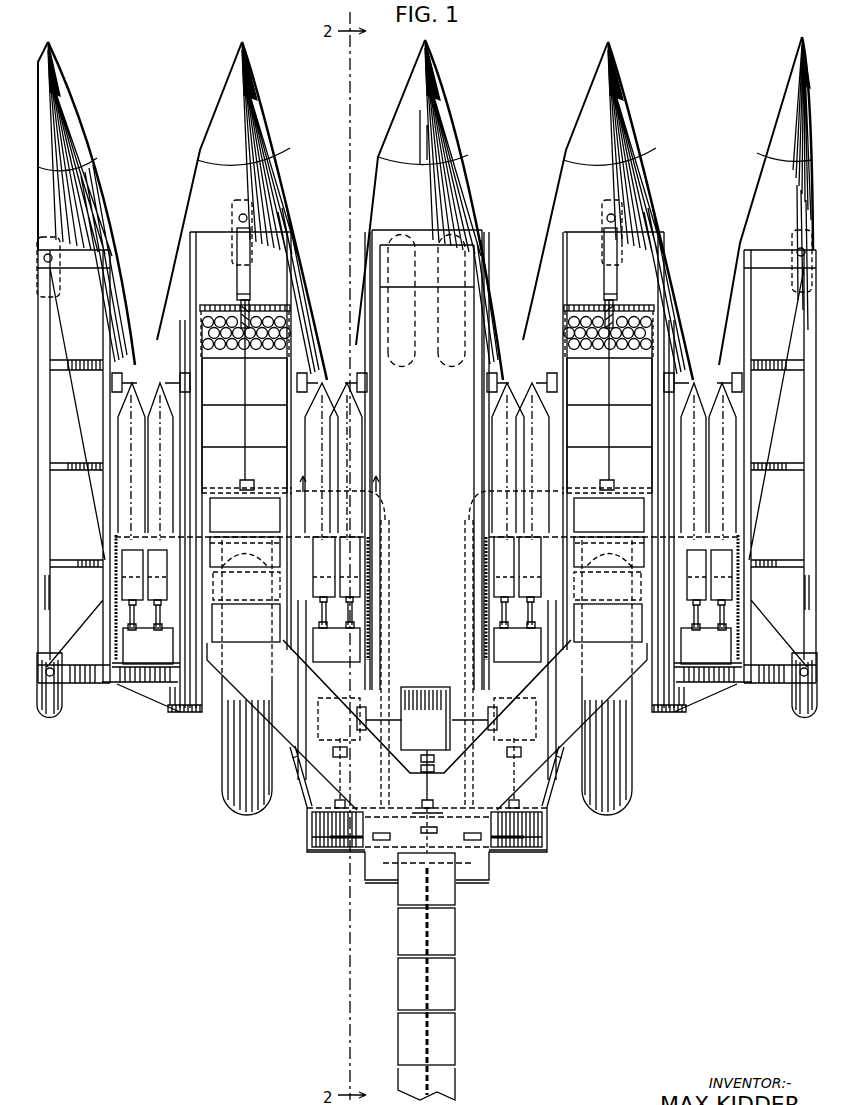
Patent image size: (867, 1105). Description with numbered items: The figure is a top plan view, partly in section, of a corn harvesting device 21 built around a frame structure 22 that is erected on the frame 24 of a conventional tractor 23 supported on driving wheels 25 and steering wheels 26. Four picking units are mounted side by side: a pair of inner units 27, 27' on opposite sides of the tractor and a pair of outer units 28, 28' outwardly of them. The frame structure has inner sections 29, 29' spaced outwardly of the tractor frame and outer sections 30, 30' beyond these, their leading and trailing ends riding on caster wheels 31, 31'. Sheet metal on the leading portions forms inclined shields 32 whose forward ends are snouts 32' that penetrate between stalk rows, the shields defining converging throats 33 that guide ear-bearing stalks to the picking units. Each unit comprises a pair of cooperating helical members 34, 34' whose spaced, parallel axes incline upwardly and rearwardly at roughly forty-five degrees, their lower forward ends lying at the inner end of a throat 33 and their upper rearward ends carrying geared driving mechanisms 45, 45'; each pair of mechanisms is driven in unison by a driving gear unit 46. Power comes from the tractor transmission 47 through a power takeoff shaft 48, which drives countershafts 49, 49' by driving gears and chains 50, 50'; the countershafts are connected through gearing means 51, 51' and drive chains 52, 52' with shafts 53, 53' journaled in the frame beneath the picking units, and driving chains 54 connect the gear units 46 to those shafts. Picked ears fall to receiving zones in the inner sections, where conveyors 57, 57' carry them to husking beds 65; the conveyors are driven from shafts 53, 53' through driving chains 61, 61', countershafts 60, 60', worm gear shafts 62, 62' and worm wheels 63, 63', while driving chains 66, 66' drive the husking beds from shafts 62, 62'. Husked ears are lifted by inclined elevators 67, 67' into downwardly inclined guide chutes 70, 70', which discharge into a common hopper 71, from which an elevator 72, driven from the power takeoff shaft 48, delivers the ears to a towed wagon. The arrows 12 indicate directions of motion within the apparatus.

The arrow 12 is at (349, 480).
The corn harvesting device 21 is at (116, 809).
The frame structure 22 is at (190, 258).
The tractor 23 is at (455, 215).
The tractor frame 24 is at (427, 460).
The driving wheels 25 is at (247, 790).
The steering wheels 26 is at (398, 312).
The inner picking unit 27 is at (333, 423).
The inner picking unit 27' is at (520, 423).
The outer picking unit 28 is at (145, 426).
The outer picking unit 28' is at (708, 426).
The inner section of frame structure 29 is at (291, 212).
The inner section of frame structure 29' is at (601, 212).
The outer section of frame structure 30 is at (88, 437).
The outer section of frame structure 30' is at (764, 437).
The caster wheel 31 is at (421, 220).
The caster wheel 31' is at (427, 703).
The inclined shield 32 is at (425, 208).
The snout 32' is at (429, 68).
The converging throat 33 is at (185, 207).
The helical member 34 is at (410, 392).
The helical member 34' is at (470, 392).
The geared driving mechanism 45 is at (426, 561).
The geared driving mechanism 45' is at (443, 561).
The driving gear unit 46 is at (139, 658).
The transmission 47 is at (419, 728).
The power takeoff shaft 48 is at (436, 790).
The countershaft 49 is at (317, 823).
The countershaft 49' is at (540, 823).
The driving gears and chains 50 is at (367, 800).
The driving gears and chains 50' is at (487, 800).
The gearing means 51 is at (360, 710).
The gearing means 51' is at (494, 710).
The drive chain 52 is at (399, 662).
The drive chain 52' is at (453, 662).
The shaft 53 is at (351, 499).
The shaft 53' is at (503, 499).
The driving chain 54 is at (113, 598).
The conveyor 57 is at (246, 312).
The conveyor 57' is at (609, 322).
The countershaft 60 is at (247, 549).
The countershaft 60' is at (607, 546).
The driving chain 61 is at (246, 515).
The driving chain 61' is at (609, 515).
The worm gear shaft 62 is at (244, 396).
The worm gear shaft 62' is at (609, 396).
The worm wheel 63 is at (227, 264).
The worm wheel 63' is at (627, 264).
The husking bed 65 is at (427, 467).
The driving chain 66 is at (216, 288).
The driving chain 66' is at (639, 288).
The inclined elevator 67 is at (265, 575).
The inclined elevator 67' is at (588, 575).
The guide chute 70 is at (268, 675).
The guide chute 70' is at (587, 675).
The hopper 71 is at (480, 885).
The elevator 72 is at (456, 983).